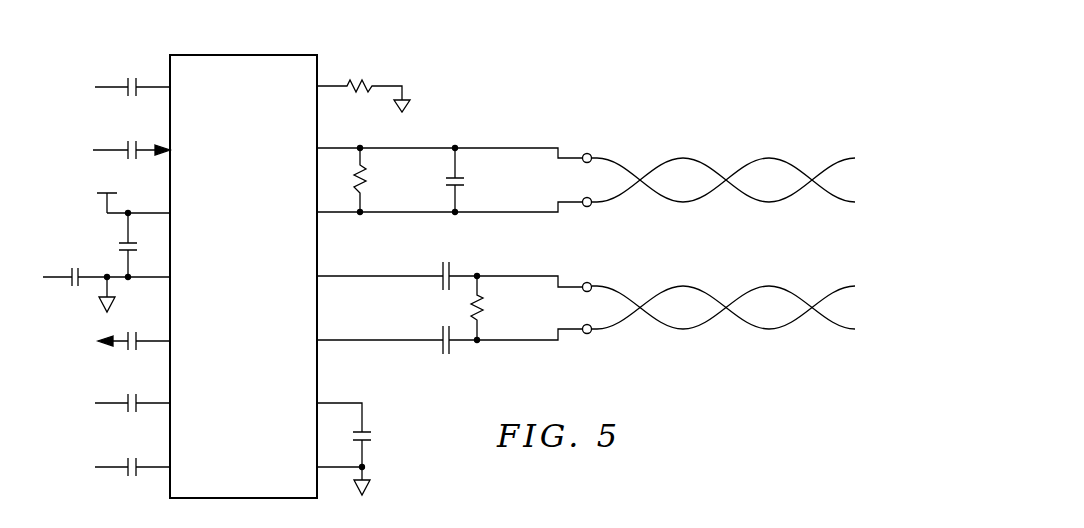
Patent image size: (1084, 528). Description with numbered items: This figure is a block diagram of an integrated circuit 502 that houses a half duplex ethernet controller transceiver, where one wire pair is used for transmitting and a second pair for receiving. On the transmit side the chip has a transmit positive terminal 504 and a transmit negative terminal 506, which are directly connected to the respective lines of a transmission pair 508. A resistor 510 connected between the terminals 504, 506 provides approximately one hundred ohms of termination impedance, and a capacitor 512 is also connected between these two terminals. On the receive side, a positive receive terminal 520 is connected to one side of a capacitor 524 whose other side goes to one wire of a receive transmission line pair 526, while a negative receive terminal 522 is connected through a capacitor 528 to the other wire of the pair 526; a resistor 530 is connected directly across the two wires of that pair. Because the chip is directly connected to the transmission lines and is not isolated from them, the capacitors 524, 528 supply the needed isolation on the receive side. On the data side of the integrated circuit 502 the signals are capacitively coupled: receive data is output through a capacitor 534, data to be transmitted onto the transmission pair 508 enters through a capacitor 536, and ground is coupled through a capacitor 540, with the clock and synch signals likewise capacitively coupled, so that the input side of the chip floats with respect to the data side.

The integrated circuit 502 is at (242, 54).
The transmit positive terminal 504 is at (338, 147).
The transmit negative terminal 506 is at (338, 214).
The transmission pair 508 is at (681, 157).
The resistor 510 is at (365, 184).
The capacitor 512 is at (463, 183).
The positive receive terminal 520 is at (392, 275).
The negative receive terminal 522 is at (381, 342).
The capacitor 524 is at (448, 264).
The receive transmission line pair 526 is at (682, 330).
The capacitor 528 is at (445, 348).
The resistor 530 is at (482, 310).
The capacitor 534 is at (132, 352).
The capacitor 536 is at (130, 140).
The capacitor 540 is at (73, 267).